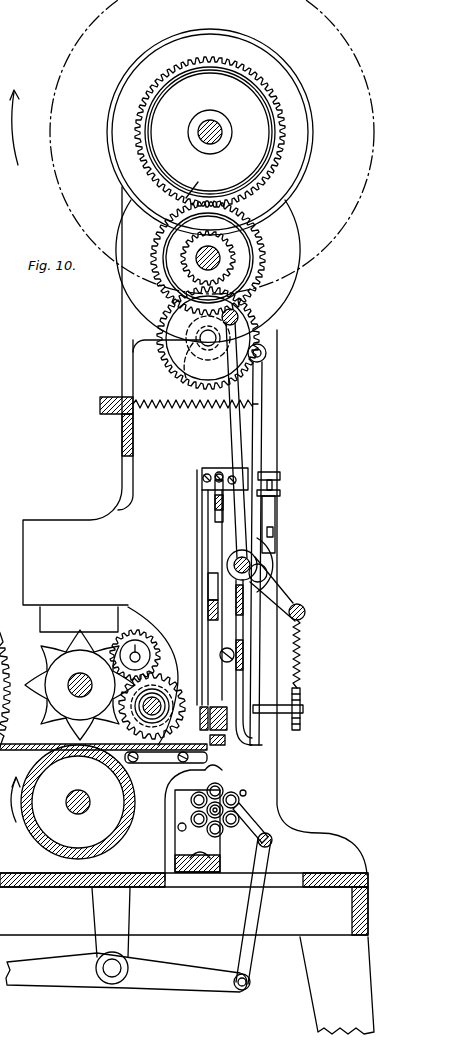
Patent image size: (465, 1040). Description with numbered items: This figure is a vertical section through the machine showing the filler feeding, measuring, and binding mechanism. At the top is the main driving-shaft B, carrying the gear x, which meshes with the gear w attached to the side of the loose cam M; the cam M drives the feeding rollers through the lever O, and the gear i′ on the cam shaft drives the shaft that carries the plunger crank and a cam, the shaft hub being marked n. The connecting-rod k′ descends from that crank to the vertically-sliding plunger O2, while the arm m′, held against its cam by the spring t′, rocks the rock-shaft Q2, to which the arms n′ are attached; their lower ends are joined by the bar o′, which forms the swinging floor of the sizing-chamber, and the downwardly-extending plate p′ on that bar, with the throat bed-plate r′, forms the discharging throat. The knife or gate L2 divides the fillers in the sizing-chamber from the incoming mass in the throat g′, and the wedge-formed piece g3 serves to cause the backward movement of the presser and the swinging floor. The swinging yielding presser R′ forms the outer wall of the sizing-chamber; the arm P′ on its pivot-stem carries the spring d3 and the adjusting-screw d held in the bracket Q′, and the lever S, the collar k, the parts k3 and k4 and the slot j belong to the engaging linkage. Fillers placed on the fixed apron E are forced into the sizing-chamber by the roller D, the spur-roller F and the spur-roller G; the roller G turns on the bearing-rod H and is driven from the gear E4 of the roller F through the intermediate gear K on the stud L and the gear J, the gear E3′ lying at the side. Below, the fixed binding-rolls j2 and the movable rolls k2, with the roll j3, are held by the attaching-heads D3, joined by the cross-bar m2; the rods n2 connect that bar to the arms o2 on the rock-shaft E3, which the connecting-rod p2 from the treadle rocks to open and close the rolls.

The main driving-shaft B is at (198, 132).
The gear x is at (198, 181).
The cam M is at (284, 240).
The gear w is at (196, 246).
The gear i′ is at (226, 262).
The shaft n is at (194, 259).
The collar k is at (192, 328).
The rods n2 is at (200, 338).
The connecting-rod p2 is at (186, 376).
The spring t′ is at (152, 412).
The connecting-rod k′ is at (225, 446).
The arm m′ is at (257, 442).
The arms n′ is at (248, 660).
The plunger O2 is at (215, 508).
The rock-shaft Q2 is at (227, 565).
The lever O is at (264, 550).
The arm P′ is at (290, 610).
The knife or gate L2 is at (210, 605).
The bar k3 is at (232, 615).
The movable binding-rolls k2 is at (240, 788).
The wedge-formed piece g3 is at (220, 640).
The pin k4 is at (227, 667).
The intermediate gear K is at (150, 628).
The spring d3 is at (304, 654).
The adjusting-screw d is at (301, 714).
The bracket Q′ is at (278, 725).
The swinging yielding presser R′ is at (262, 734).
The bar o′ is at (244, 755).
The downwardly-extending plate p′ is at (252, 765).
The lever S is at (218, 763).
The slot j is at (191, 798).
The binding-rolls j2 is at (191, 817).
The roller j3 is at (207, 830).
The attaching-heads D3 is at (252, 814).
The cross-bar m2 is at (270, 843).
The arms o2 is at (126, 972).
The rock-shaft E3 is at (112, 976).
The roller D is at (40, 770).
The fixed apron E is at (4, 762).
The throat bed-plate r′ is at (151, 758).
The throat g′ is at (176, 758).
The spur-roller F is at (80, 685).
The stud L is at (135, 655).
The spur-roller G is at (172, 690).
The bearing-rod H is at (152, 702).
The gear J is at (178, 700).
The gear E4 is at (44, 686).
The gear wheel E3′ is at (30, 635).